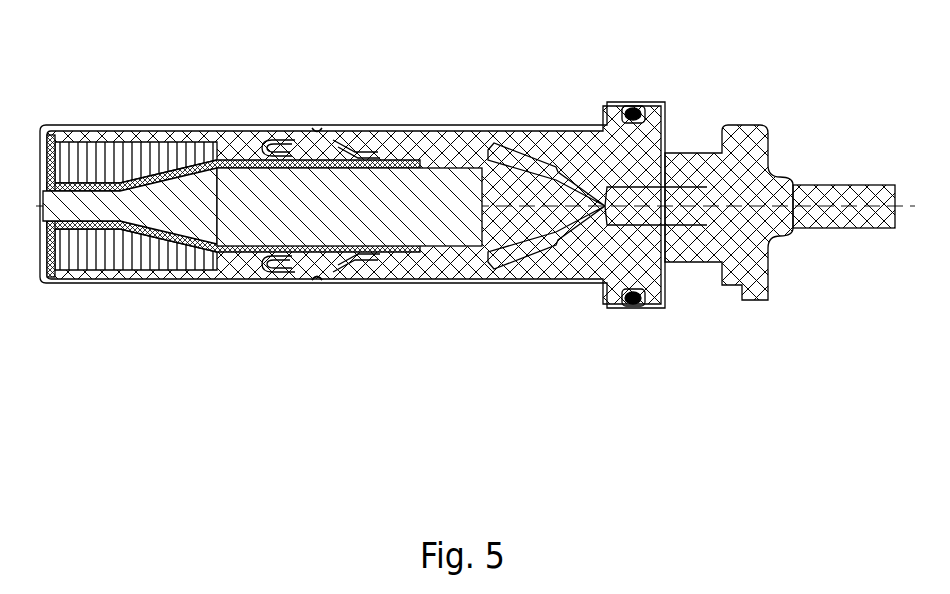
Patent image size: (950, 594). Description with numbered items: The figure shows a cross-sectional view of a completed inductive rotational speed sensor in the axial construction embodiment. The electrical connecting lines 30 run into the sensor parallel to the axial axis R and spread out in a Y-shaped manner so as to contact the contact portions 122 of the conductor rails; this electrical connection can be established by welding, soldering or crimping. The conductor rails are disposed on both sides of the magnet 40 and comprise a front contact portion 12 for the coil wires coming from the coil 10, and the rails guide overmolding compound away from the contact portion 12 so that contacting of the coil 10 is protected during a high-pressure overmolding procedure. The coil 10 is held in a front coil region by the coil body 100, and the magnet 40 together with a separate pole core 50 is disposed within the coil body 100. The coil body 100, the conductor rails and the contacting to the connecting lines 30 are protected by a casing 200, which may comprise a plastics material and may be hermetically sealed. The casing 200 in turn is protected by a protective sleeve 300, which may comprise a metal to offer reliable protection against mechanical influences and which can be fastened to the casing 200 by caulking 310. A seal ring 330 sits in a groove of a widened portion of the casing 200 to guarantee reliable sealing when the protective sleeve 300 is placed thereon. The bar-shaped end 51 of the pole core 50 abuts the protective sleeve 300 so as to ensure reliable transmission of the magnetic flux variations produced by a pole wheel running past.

The coil 10 is at (133, 157).
The front contact portion 12 is at (279, 148).
The electrical connecting lines 30 is at (833, 190).
The magnet 40 is at (265, 233).
The pole core 50 is at (175, 227).
The bar-shaped end 51 is at (30, 197).
The coil body 100 is at (228, 155).
The contact portions 122 is at (523, 160).
The casing 200 is at (667, 160).
The protective sleeve 300 is at (205, 127).
The caulking 310 is at (317, 281).
The seal ring 330 is at (632, 300).
The axial axis R is at (905, 210).